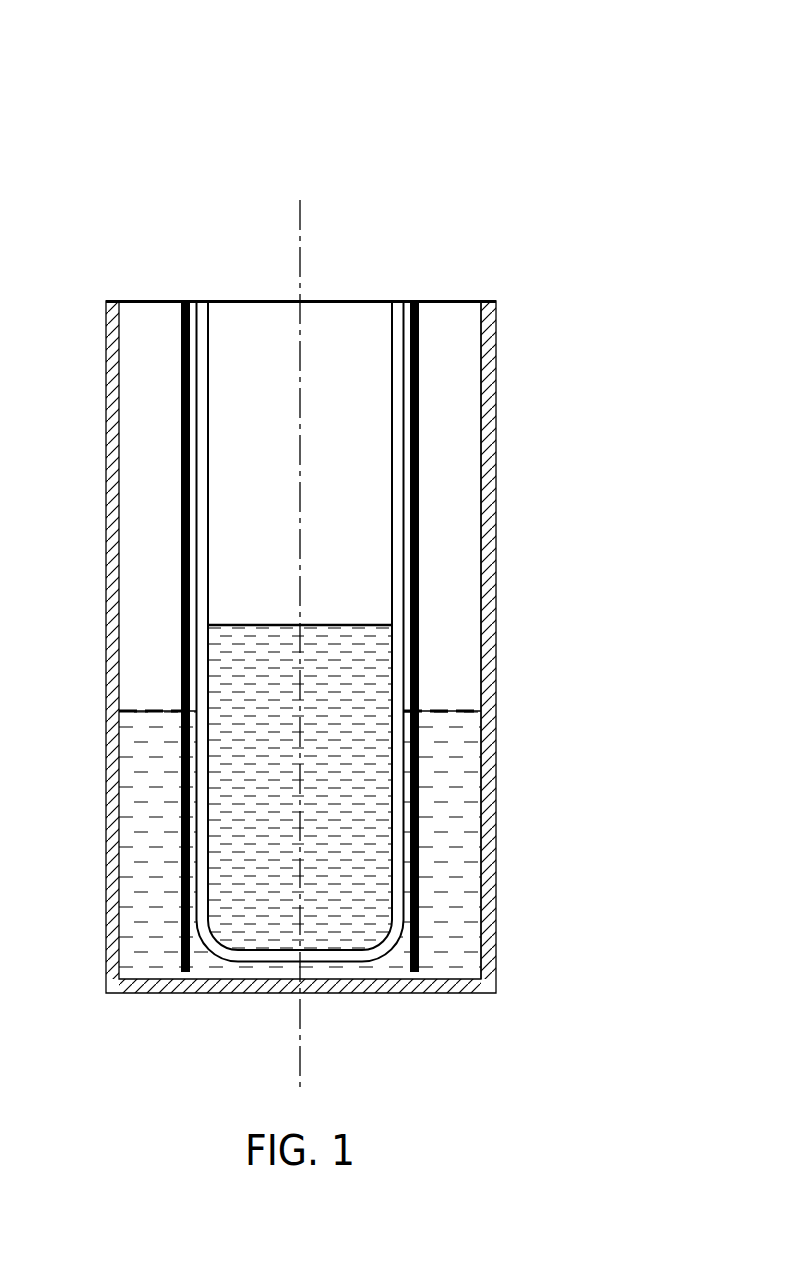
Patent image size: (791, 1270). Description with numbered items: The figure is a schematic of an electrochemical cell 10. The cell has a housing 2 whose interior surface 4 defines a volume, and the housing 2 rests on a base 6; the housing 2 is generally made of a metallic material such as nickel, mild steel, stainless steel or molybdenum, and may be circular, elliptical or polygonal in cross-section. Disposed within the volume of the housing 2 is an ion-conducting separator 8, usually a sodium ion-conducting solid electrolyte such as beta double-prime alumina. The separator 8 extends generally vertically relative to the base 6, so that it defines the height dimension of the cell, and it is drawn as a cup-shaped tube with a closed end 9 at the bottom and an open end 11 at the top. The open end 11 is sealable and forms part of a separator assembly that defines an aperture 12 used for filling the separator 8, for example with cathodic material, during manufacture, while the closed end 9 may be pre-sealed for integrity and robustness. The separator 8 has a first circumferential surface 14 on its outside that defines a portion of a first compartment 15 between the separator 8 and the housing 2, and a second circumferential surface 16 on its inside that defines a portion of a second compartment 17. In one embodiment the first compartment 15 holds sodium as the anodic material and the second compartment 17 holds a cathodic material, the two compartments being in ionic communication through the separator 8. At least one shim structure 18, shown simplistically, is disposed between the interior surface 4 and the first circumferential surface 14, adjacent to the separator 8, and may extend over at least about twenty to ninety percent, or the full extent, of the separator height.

The electrochemical cell 10 is at (572, 74).
The housing 2 is at (495, 470).
The interior surface 4 is at (483, 560).
The base 6 is at (160, 995).
The ion-conducting separator 8 is at (397, 693).
The closed end 9 is at (350, 957).
The open end 11 is at (205, 308).
The aperture 12 is at (264, 308).
The first circumferential surface 14 is at (403, 647).
The first compartment 15 is at (463, 380).
The second circumferential surface 16 is at (208, 588).
The second compartment 17 is at (265, 519).
The shim structure 18 is at (420, 850).